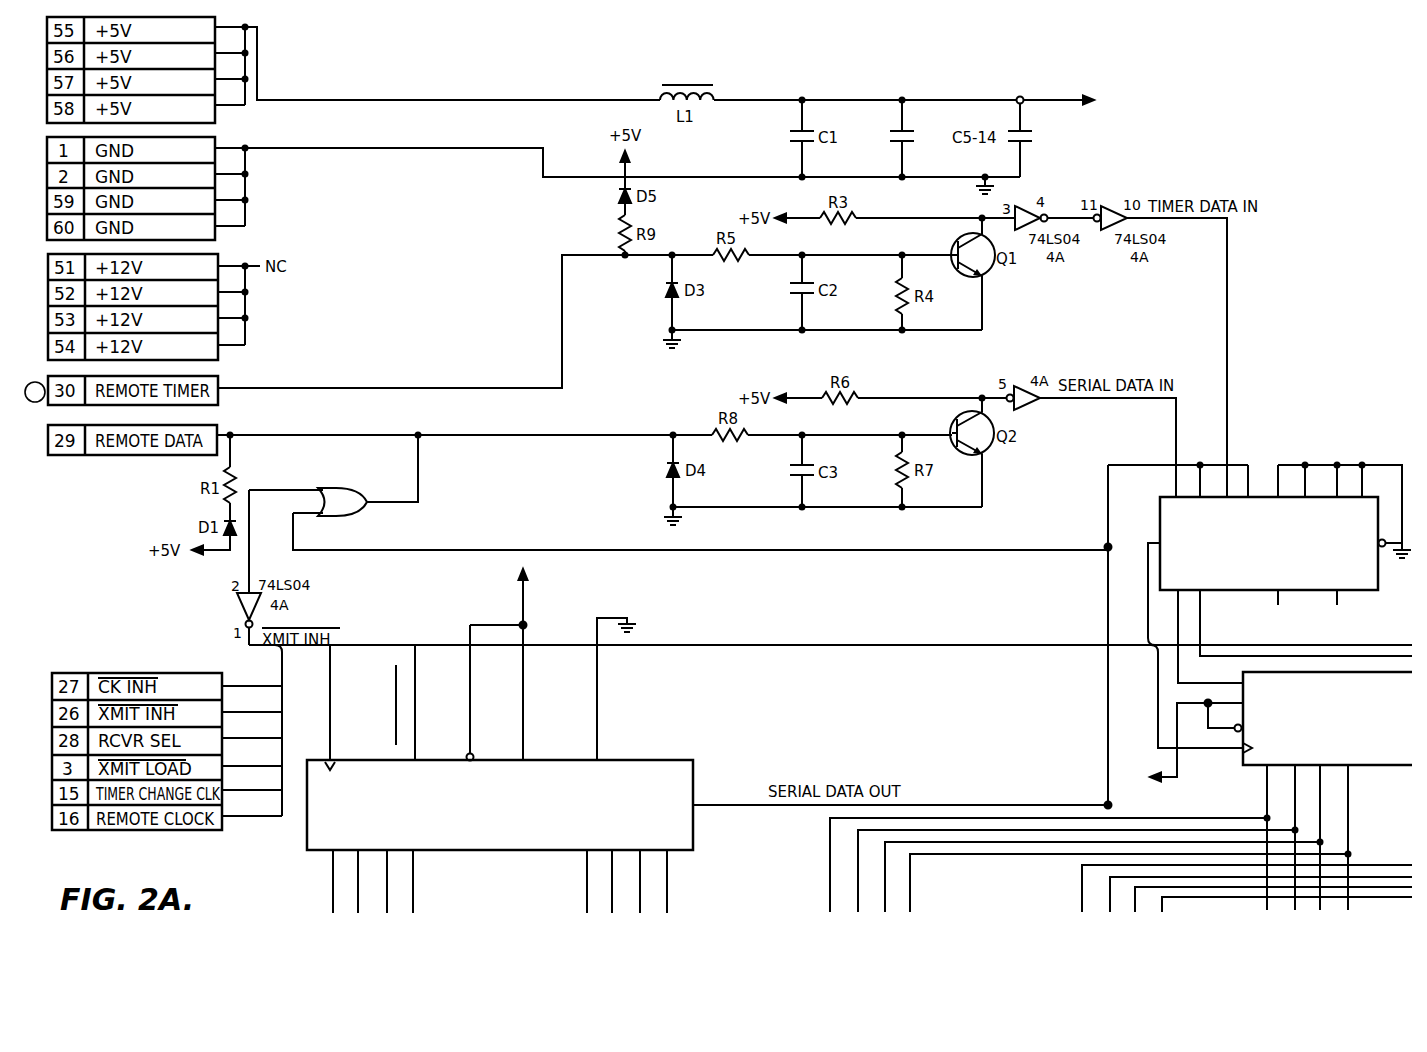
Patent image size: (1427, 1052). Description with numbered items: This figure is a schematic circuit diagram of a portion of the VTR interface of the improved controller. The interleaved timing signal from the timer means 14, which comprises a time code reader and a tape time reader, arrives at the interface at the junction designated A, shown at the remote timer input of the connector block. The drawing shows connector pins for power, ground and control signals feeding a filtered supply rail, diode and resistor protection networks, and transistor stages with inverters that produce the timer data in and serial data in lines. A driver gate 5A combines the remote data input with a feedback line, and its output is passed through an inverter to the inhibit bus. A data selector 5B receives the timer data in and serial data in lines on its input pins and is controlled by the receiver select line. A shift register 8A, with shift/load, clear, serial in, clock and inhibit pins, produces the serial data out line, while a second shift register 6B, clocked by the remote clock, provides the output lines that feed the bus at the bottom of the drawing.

The timer means 14 is at (36, 382).
The 75453 driver gate 5A is at (678, 492).
The 74LS157 data selector 5B is at (1260, 573).
The 74LS164 shift register 6B is at (1265, 777).
The 74LS166 shift register 8A is at (511, 739).